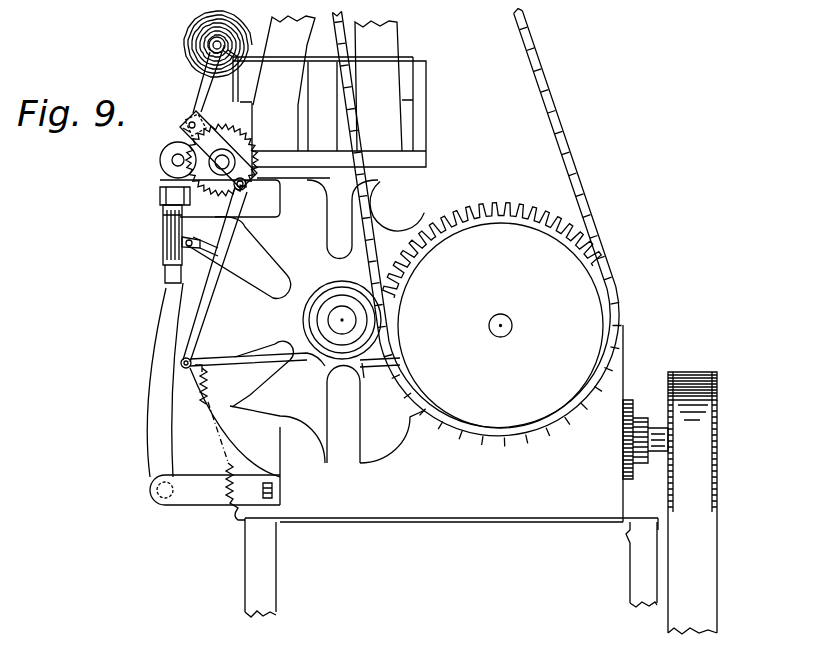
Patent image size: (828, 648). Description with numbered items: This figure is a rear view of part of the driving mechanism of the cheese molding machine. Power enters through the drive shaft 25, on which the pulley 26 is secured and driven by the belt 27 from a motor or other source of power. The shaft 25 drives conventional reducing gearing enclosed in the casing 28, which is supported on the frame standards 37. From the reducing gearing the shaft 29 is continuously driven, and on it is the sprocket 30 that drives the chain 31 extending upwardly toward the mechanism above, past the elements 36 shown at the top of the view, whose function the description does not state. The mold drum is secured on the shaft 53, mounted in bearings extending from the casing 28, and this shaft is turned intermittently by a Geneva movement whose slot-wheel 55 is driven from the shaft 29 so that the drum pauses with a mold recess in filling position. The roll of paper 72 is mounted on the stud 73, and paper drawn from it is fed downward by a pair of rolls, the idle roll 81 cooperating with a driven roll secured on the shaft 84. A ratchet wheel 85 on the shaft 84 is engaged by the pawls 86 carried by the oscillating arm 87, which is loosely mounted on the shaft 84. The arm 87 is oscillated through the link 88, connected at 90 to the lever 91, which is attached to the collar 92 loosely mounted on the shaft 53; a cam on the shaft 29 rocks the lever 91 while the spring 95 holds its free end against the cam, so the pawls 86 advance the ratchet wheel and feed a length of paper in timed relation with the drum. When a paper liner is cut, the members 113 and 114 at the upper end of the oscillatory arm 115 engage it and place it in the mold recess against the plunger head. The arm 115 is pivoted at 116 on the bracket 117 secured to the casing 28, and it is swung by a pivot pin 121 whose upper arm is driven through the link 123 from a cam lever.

The drive shaft 25 is at (657, 432).
The pulley 26 is at (718, 403).
The belt 27 is at (697, 447).
The casing 28 is at (451, 489).
The shaft 29 is at (497, 323).
The sprocket 30 is at (490, 210).
The chain 31 is at (560, 155).
The blades 36 is at (327, 83).
The frame standards 37 is at (257, 567).
The shaft 53 is at (341, 312).
The slot-wheel 55 is at (396, 232).
The roll of paper 72 is at (192, 40).
The stud 73 is at (211, 48).
The feeding roll 81 is at (160, 160).
The shaft 84 is at (215, 165).
The ratchet wheel 85 is at (246, 153).
The pawls 86 is at (183, 129).
The oscillating arm 87 is at (190, 118).
The link 88 is at (200, 322).
The connection 90 is at (181, 365).
The lever 91 is at (243, 354).
The collar 92 is at (378, 381).
The spring 95 is at (214, 388).
The member 113 is at (214, 196).
The member 114 is at (212, 256).
The oscillatory arm 115 is at (163, 298).
The pivot 116 is at (152, 496).
The bracket 117 is at (192, 495).
The pivot pin 121 is at (168, 245).
The link 123 is at (165, 195).